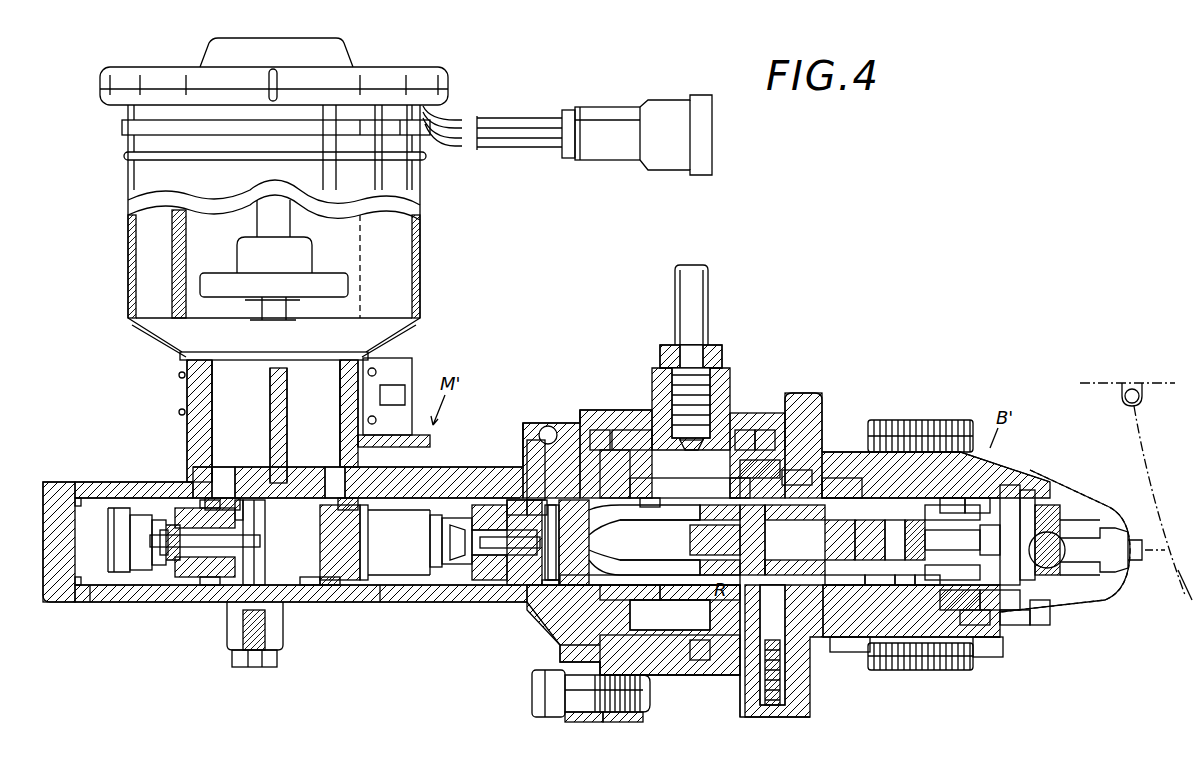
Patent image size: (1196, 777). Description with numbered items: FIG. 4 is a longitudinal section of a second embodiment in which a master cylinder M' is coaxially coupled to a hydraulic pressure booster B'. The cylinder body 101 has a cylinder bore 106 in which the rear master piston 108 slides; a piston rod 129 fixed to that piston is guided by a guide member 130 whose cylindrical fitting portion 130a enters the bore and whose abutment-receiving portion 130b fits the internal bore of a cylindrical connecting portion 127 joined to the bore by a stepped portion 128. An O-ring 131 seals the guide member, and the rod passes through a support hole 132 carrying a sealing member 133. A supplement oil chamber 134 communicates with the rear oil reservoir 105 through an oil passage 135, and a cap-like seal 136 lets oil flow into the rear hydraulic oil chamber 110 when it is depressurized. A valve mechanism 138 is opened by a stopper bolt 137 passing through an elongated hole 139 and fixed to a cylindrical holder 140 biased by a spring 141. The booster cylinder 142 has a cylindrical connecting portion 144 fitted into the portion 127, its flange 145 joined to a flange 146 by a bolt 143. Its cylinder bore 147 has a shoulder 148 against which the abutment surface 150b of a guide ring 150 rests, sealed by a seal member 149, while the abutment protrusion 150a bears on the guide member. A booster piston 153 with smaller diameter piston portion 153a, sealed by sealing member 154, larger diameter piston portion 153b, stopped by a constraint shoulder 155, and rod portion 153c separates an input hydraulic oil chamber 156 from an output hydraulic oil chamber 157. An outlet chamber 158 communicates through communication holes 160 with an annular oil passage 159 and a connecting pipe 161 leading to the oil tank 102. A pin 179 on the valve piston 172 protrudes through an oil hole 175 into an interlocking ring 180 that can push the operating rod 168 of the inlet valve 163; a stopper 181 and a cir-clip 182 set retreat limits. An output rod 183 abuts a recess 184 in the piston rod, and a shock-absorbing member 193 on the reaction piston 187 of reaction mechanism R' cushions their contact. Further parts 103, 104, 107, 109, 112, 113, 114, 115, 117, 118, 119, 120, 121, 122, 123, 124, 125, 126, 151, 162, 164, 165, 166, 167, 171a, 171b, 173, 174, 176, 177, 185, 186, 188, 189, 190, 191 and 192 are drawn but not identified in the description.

The cylinder body 101 is at (122, 482).
The oil tank 102 is at (190, 393).
The tube 103 is at (288, 385).
The chamber 104 is at (241, 421).
The rear oil reservoir 105 is at (313, 421).
The cylinder bore 106 is at (420, 590).
The passage 107 is at (328, 492).
The rear master piston 108 is at (520, 590).
The chamber 109 is at (285, 542).
The rear hydraulic oil chamber 110 is at (399, 542).
The seal 112 is at (82, 590).
The cup 113 is at (452, 575).
The wall 114 is at (112, 590).
The wall 115 is at (372, 590).
The seal 117 is at (318, 590).
The seal assembly 118 is at (228, 590).
The seal 119 is at (338, 590).
The port 120 is at (216, 500).
The port 121 is at (345, 500).
The bolt 122 is at (286, 600).
The pin 123 is at (243, 500).
The piston rod 124 is at (262, 544).
The piston 125 is at (160, 560).
The partition 126 is at (312, 544).
The cylindrical connecting portion 127 is at (660, 650).
The stepped portion 128 is at (651, 506).
The piston rod 129 is at (678, 585).
The guide member 130 is at (636, 489).
The cylindrical fitting portion 130a is at (595, 560).
The abutment-receiving portion 130b is at (565, 423).
The O-ring 131 is at (605, 430).
The support hole 132 is at (562, 510).
The sealing member 133 is at (681, 540).
The supplement oil chamber 134 is at (548, 585).
The oil passage 135 is at (527, 440).
The cap-like seal 136 is at (510, 505).
The stopper bolt 137 is at (570, 542).
The valve mechanism 138 is at (478, 585).
The elongated hole 139 is at (644, 540).
The cylindrical holder 140 is at (560, 500).
The spring 141 is at (535, 508).
The booster cylinder 142 is at (843, 470).
The bolt 143 is at (546, 718).
The cylindrical connecting portion 144 is at (745, 430).
The flange 145 is at (625, 722).
The flange 146 is at (588, 720).
The cylinder bore 147 is at (790, 480).
The shoulder 148 is at (765, 430).
The seal member 149 is at (735, 412).
The guide ring 150 is at (690, 497).
The abutment protrusion 150a is at (652, 430).
The abutment surface 150b is at (804, 445).
The push rod 151 is at (1062, 520).
The booster piston 153 is at (1030, 498).
The smaller diameter piston portion 153a is at (870, 640).
The larger diameter piston portion 153b is at (945, 670).
The rod portion 153c is at (1040, 625).
The sealing member 154 is at (745, 470).
The constraint shoulder 155 is at (935, 470).
The input hydraulic oil chamber 156 is at (912, 670).
The output hydraulic oil chamber 157 is at (965, 600).
The outlet chamber 158 is at (690, 560).
The annular oil passage 159 is at (698, 655).
The communication holes 160 is at (645, 630).
The connecting pipe 161 is at (708, 300).
The plug 162 is at (735, 660).
The inlet valve 163 is at (870, 470).
The spring 164 is at (905, 470).
The seal 165 is at (899, 540).
The seal 166 is at (921, 540).
The passage 167 is at (850, 480).
The operating rod 168 is at (950, 500).
The spool portion 171a is at (871, 591).
The boot 171b is at (1065, 560).
The valve piston 172 is at (1058, 505).
The spool 173 is at (841, 591).
The spring 174 is at (975, 500).
The oil hole 175 is at (1015, 490).
The land 176 is at (896, 591).
The lever 177 is at (1125, 570).
The pin 179 is at (1001, 542).
The interlocking ring 180 is at (985, 620).
The stopper 181 is at (1020, 620).
The cir-clip 182 is at (1118, 520).
The output rod 183 is at (715, 540).
The recess 184 is at (746, 540).
The spring 185 is at (722, 487).
The plug 186 is at (800, 600).
The reaction piston 187 is at (952, 542).
The sleeve 188 is at (780, 575).
The seal 189 is at (839, 540).
The seal 190 is at (872, 540).
The seal 191 is at (1000, 585).
The land 192 is at (923, 591).
The shock-absorbing member 193 is at (740, 520).